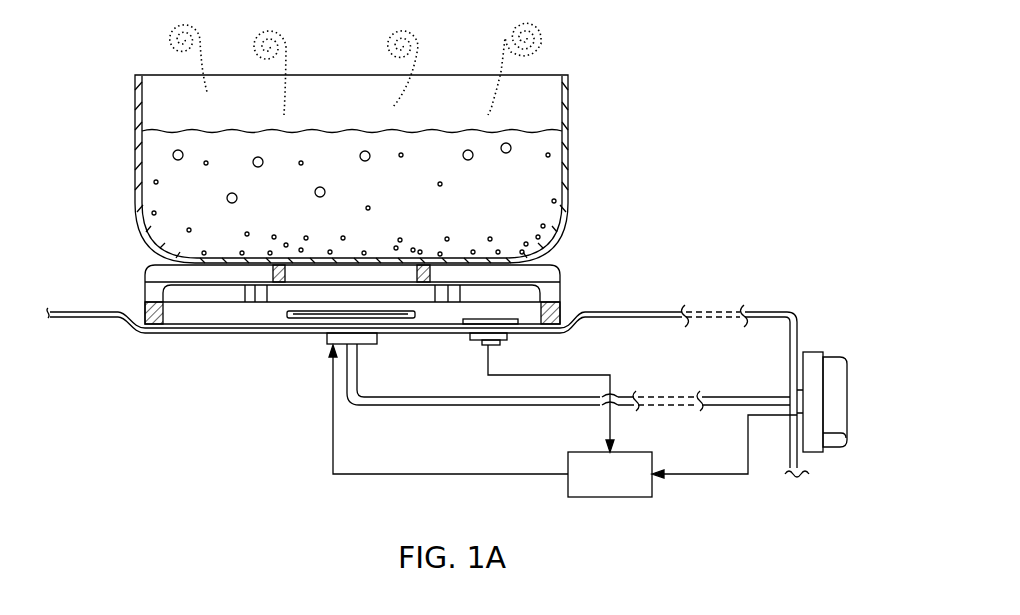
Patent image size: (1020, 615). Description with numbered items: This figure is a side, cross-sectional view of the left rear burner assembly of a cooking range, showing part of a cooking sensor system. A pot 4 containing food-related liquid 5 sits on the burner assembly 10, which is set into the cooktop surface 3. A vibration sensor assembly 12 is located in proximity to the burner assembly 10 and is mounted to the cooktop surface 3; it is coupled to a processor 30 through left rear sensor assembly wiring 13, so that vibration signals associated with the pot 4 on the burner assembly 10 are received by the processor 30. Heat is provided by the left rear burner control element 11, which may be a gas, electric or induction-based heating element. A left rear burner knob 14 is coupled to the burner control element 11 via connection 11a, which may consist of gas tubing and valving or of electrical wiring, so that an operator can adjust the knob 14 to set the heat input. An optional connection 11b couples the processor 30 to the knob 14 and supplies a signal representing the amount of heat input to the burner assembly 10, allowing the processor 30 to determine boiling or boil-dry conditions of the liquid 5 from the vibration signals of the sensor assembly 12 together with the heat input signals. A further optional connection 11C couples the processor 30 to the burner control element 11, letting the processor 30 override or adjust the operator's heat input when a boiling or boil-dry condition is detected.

The cooktop surface 3 is at (647, 313).
The pot 4 is at (568, 75).
The food-related liquid 5 is at (530, 133).
The burner assembly 10 is at (556, 261).
The left rear burner control element 11 is at (445, 322).
The connection 11a is at (427, 407).
The connection 11b is at (695, 472).
The connection 11C is at (333, 420).
The vibration sensor assembly 12 is at (493, 313).
The left rear sensor assembly wiring 13 is at (583, 373).
The left rear burner knob 14 is at (836, 357).
The processor 30 is at (599, 489).